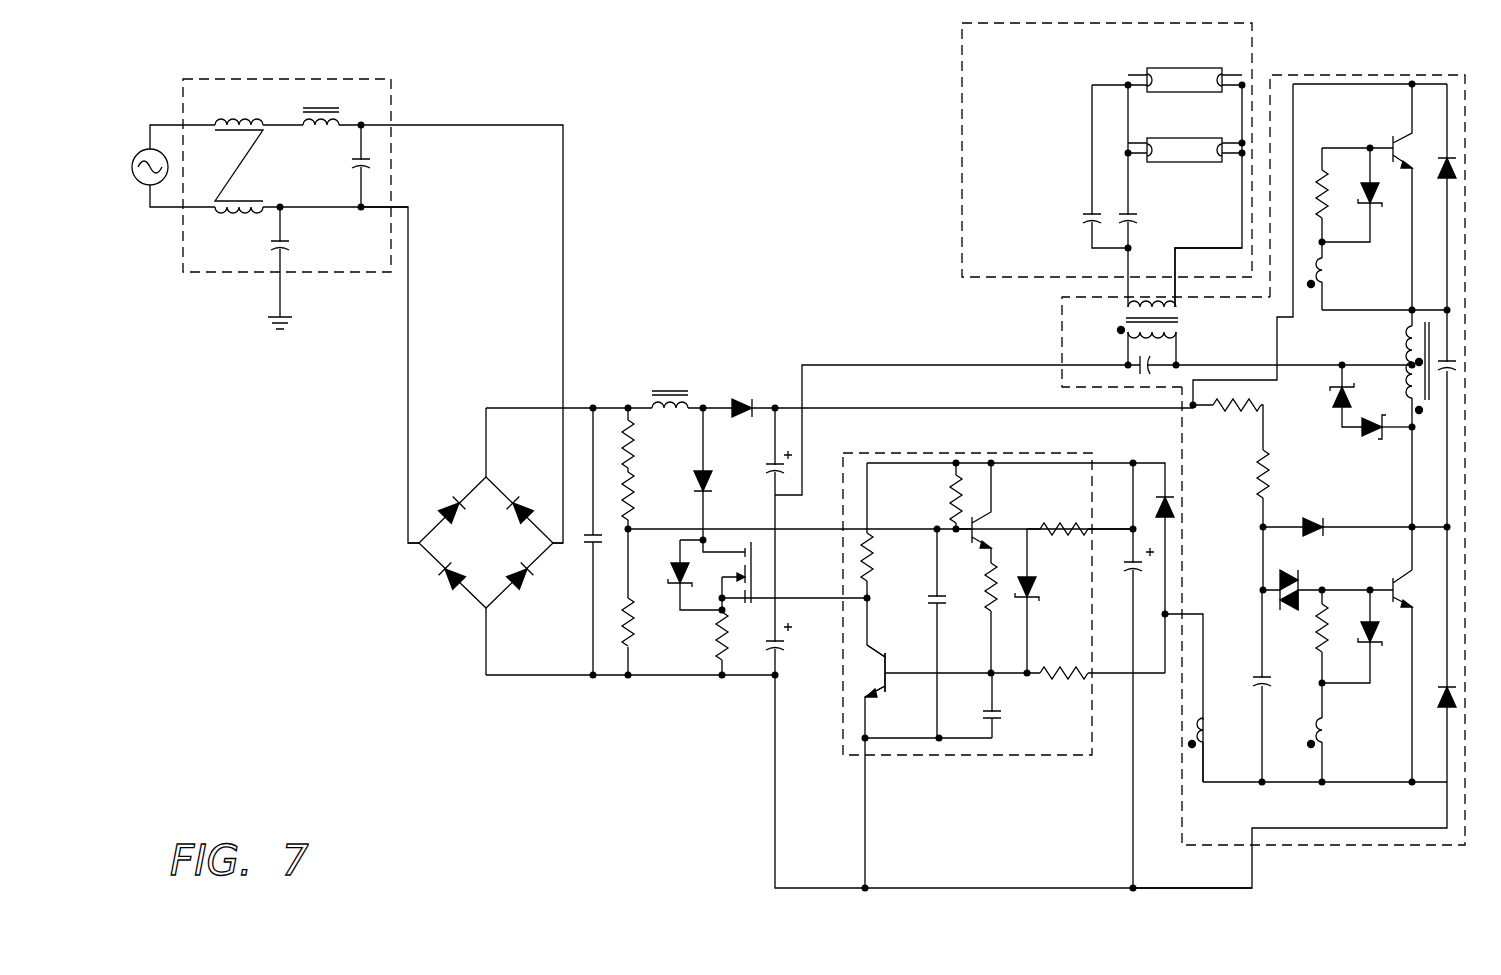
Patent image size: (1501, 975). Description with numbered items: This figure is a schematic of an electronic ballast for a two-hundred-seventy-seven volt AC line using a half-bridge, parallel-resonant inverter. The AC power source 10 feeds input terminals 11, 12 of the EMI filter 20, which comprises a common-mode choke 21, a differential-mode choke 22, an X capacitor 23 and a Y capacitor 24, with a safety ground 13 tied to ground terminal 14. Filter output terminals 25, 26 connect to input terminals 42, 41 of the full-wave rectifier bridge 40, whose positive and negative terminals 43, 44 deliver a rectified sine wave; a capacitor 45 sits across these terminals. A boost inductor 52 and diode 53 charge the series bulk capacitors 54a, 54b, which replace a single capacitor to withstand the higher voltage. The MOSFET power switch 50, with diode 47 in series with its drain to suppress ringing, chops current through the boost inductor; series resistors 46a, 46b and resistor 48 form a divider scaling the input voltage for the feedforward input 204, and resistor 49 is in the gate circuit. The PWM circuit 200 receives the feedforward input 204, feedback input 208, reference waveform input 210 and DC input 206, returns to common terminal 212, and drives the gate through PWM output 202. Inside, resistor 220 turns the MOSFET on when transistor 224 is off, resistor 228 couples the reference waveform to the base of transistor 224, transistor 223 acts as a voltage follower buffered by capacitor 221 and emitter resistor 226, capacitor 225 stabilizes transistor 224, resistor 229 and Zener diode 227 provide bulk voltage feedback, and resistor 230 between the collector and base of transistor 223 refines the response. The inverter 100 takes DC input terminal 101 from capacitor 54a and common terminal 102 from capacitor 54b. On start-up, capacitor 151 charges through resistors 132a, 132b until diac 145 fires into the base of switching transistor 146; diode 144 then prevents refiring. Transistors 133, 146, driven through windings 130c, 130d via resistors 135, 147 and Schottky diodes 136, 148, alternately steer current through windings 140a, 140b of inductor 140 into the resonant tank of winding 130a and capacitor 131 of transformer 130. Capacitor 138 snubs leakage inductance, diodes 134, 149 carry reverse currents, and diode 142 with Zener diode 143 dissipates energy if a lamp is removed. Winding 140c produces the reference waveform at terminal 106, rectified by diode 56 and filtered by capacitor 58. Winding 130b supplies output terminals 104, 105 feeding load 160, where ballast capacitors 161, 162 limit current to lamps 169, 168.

The AC power source 10 is at (180, 167).
The input terminal 11 is at (150, 125).
The input terminal 12 is at (150, 207).
The safety ground 13 is at (278, 309).
The ground terminal 14 is at (283, 274).
The electromagnetic interference filter 20 is at (391, 99).
The common-mode choke 21 is at (260, 123).
The differential-mode choke 22 is at (305, 108).
The X capacitor 23 is at (359, 163).
The Y capacitor 24 is at (283, 243).
The output terminal 25 is at (396, 126).
The output terminal 26 is at (404, 208).
The full-wave rectifier bridge assembly 40 is at (400, 600).
The input terminal 41 is at (408, 540).
The input terminal 42 is at (562, 510).
The positive terminal 43 is at (496, 407).
The negative terminal 44 is at (486, 631).
The filter capacitor 45 is at (589, 548).
The resistor 46a is at (636, 440).
The resistor 46b is at (637, 493).
The diode 47 is at (712, 483).
The resistor 48 is at (632, 635).
The resistor 49 is at (717, 657).
The MOSFET power switch 50 is at (678, 592).
The boost inductor 52 is at (675, 388).
The diode 53 is at (740, 396).
The bulk capacitor 54a is at (770, 459).
The bulk capacitor 54b is at (771, 637).
The diode 56 is at (1173, 506).
The capacitor 58 is at (1124, 573).
The inverter 100 is at (1060, 299).
The DC input terminal 101 is at (1062, 365).
The common terminal 102 is at (1254, 884).
The inverter output terminal 104 is at (1128, 282).
The inverter output terminal 105 is at (1195, 248).
The reference waveform terminal 106 is at (1180, 612).
The transformer 130 is at (1204, 318).
The winding 130a is at (1176, 333).
The winding 130b is at (1128, 308).
The winding 130c is at (1330, 278).
The winding 130d is at (1330, 743).
The capacitor 131 is at (1140, 361).
The resistor 132a is at (1230, 411).
The resistor 132b is at (1270, 466).
The switching transistor 133 is at (1403, 135).
The diode 134 is at (1443, 160).
The resistor 135 is at (1320, 170).
The Schottky diode 136 is at (1366, 193).
The capacitor 138 is at (1438, 372).
The inductor 140 is at (1358, 330).
The winding 140a is at (1410, 336).
The winding 140b is at (1410, 384).
The winding 140c is at (1208, 740).
The diode 142 is at (1332, 396).
The Zener diode 143 is at (1367, 434).
The diode 144 is at (1310, 520).
The diac 145 is at (1288, 570).
The power switching transistor 146 is at (1401, 578).
The resistor 147 is at (1320, 636).
The Schottky diode 148 is at (1364, 632).
The diode 149 is at (1442, 709).
The capacitor 151 is at (1260, 677).
The load 160 is at (962, 194).
The ballast capacitor 161 is at (1092, 197).
The ballast capacitor 162 is at (1129, 197).
The lamp 168 is at (1158, 138).
The lamp 169 is at (1156, 68).
The PWM circuit 200 is at (843, 755).
The PWM output 202 is at (842, 598).
The feedforward input 204 is at (840, 528).
The DC input 206 is at (1108, 462).
The feedback input 208 is at (1133, 528).
The reference waveform input 210 is at (1147, 676).
The common terminal 212 is at (867, 833).
The resistor 220 is at (875, 540).
The capacitor 221 is at (935, 598).
The transistor 223 is at (992, 516).
The transistor 224 is at (873, 656).
The capacitor 225 is at (995, 717).
The resistor 226 is at (991, 591).
The Zener diode 227 is at (1030, 583).
The resistor 228 is at (1060, 667).
The resistor 229 is at (1047, 533).
The resistor 230 is at (956, 500).